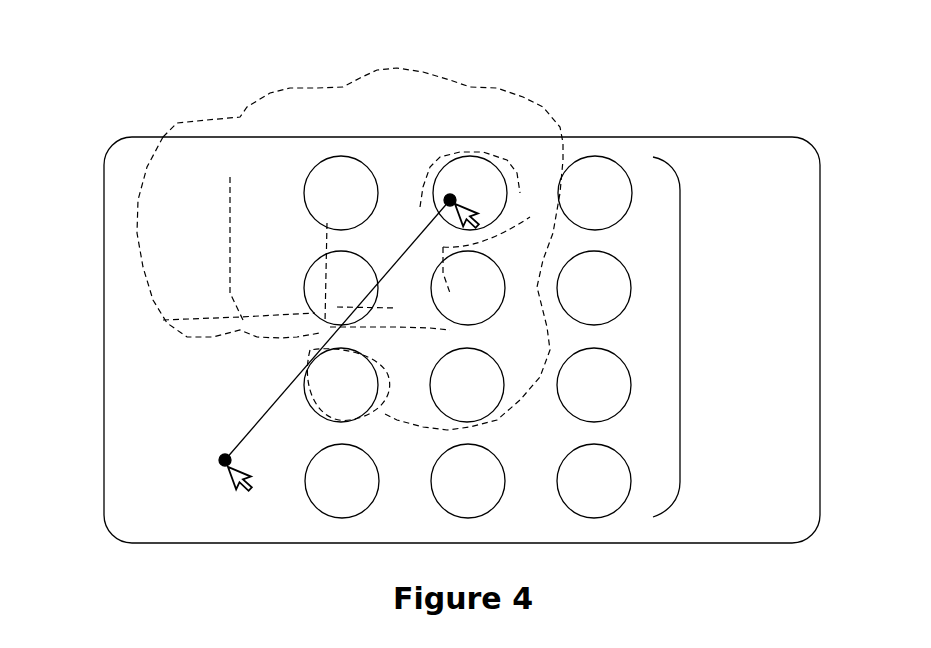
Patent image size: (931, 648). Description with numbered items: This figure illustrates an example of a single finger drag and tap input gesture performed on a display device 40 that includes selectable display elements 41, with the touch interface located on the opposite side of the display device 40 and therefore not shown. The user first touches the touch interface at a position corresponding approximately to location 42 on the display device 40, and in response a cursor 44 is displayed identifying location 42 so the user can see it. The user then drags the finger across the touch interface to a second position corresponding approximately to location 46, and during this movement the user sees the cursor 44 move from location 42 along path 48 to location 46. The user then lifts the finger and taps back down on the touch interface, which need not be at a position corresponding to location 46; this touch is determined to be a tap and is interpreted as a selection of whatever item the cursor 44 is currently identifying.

The display device 40 is at (720, 137).
The selectable display elements 41 is at (680, 337).
The location 42 is at (225, 460).
The cursor 44 is at (226, 470).
The location 46 is at (448, 200).
The path 48 is at (280, 397).